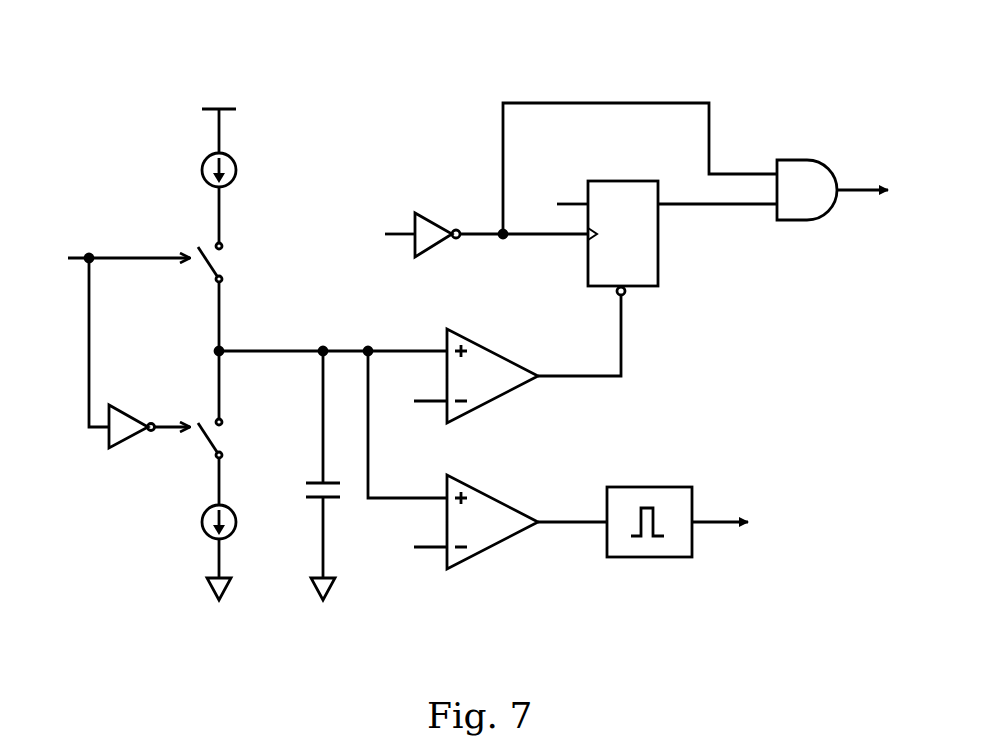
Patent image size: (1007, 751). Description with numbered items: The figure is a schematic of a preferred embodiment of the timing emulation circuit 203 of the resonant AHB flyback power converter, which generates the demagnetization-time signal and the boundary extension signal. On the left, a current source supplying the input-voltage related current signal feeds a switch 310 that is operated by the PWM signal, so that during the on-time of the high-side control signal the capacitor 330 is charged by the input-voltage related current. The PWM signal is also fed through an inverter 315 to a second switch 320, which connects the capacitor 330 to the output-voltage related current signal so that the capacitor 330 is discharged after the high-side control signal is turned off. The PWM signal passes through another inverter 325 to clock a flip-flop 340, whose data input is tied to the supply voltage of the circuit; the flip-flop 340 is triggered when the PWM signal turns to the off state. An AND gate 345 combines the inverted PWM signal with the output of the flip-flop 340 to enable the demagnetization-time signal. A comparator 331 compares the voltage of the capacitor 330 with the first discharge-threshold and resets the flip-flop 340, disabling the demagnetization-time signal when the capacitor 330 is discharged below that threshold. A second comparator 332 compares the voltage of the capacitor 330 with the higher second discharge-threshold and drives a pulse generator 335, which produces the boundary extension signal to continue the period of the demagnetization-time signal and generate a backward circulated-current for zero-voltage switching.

The timing emulation circuit 203 is at (405, 58).
The switch 310 is at (235, 262).
The inverter 315 is at (123, 406).
The switch 320 is at (235, 438).
The inverter 325 is at (427, 216).
The capacitor 330 is at (301, 475).
The comparator 331 is at (494, 347).
The comparator 332 is at (494, 494).
The pulse generator 335 is at (641, 487).
The flip-flop 340 is at (609, 181).
The AND gate 345 is at (791, 160).